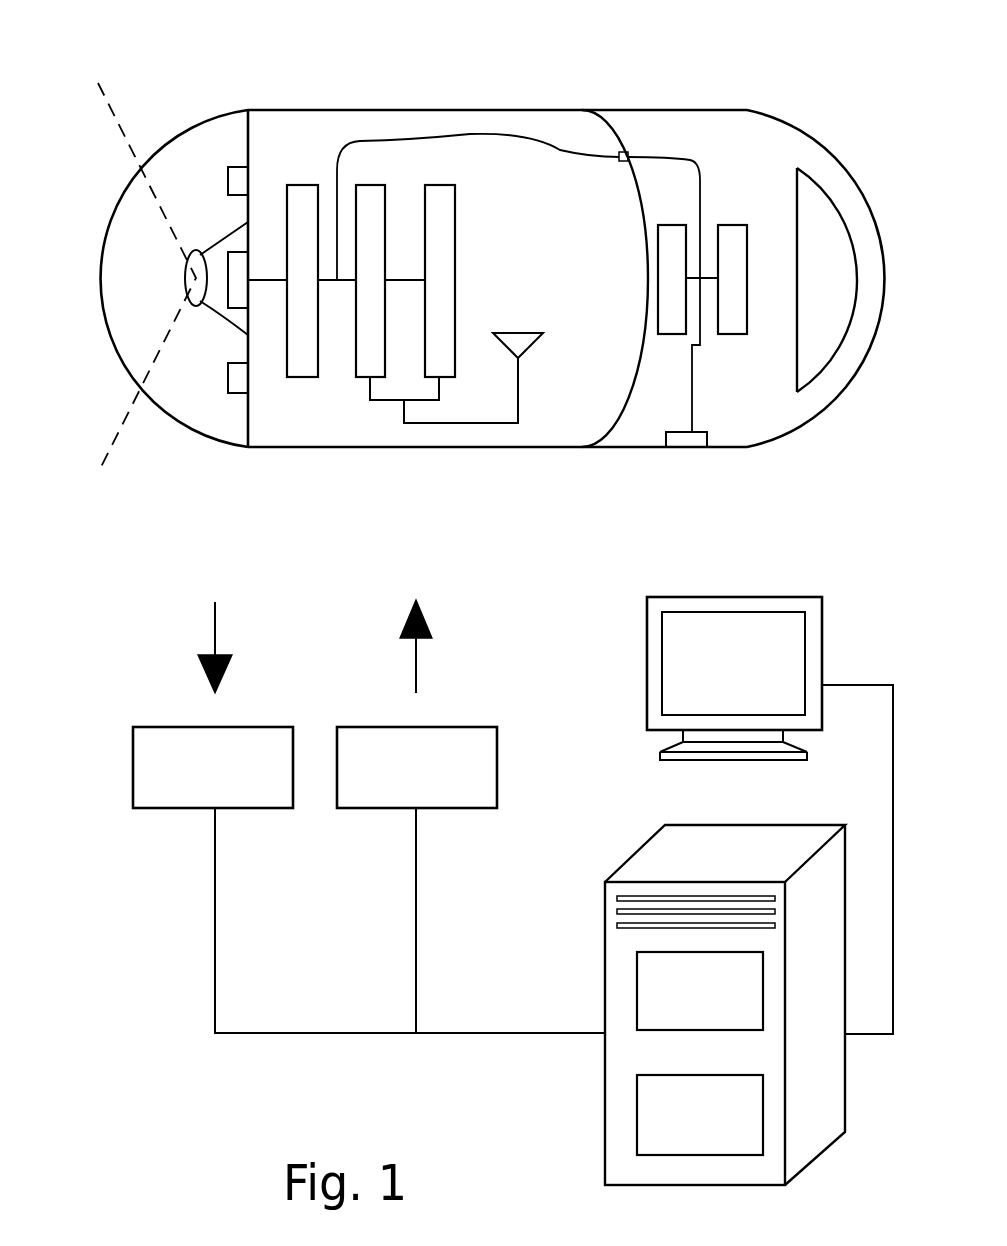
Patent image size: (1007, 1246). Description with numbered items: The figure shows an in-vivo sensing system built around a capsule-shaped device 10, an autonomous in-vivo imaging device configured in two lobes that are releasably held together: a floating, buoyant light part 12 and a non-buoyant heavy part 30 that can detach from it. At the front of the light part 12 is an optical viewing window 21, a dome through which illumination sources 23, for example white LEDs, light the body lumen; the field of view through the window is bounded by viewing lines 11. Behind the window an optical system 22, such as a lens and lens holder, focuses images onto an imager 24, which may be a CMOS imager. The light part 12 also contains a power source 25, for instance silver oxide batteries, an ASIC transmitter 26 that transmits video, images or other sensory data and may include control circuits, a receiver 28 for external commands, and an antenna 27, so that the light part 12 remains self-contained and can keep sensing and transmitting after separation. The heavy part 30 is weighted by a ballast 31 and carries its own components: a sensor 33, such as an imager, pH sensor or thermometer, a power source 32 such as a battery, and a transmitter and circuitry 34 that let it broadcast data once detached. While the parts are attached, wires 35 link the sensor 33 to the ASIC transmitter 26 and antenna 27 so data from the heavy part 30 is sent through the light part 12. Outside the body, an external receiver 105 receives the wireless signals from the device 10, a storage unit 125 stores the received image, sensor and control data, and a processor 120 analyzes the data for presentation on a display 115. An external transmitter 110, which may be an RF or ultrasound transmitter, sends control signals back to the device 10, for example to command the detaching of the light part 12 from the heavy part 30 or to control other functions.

The device 10 is at (348, 83).
The viewing lines 11 is at (118, 116).
The light part 12 is at (493, 448).
The optical viewing window 21 is at (92, 207).
The optical system 22 is at (187, 266).
The illumination sources 23 is at (227, 185).
The imager 24 is at (250, 265).
The power source 25 is at (300, 377).
The ASIC transmitter 26 is at (440, 185).
The antenna 27 is at (520, 333).
The receiver 28 is at (372, 185).
The heavy part 30 is at (795, 130).
The ballast 31 is at (835, 208).
The power source 32 is at (743, 334).
The sensor 33 is at (677, 442).
The transmitter and circuitry 34 is at (678, 334).
The wires 35 is at (655, 157).
The external receiver 105 is at (133, 771).
The external transmitter 110 is at (497, 772).
The display 115 is at (647, 648).
The processor 120 is at (637, 1111).
The storage unit 125 is at (637, 992).